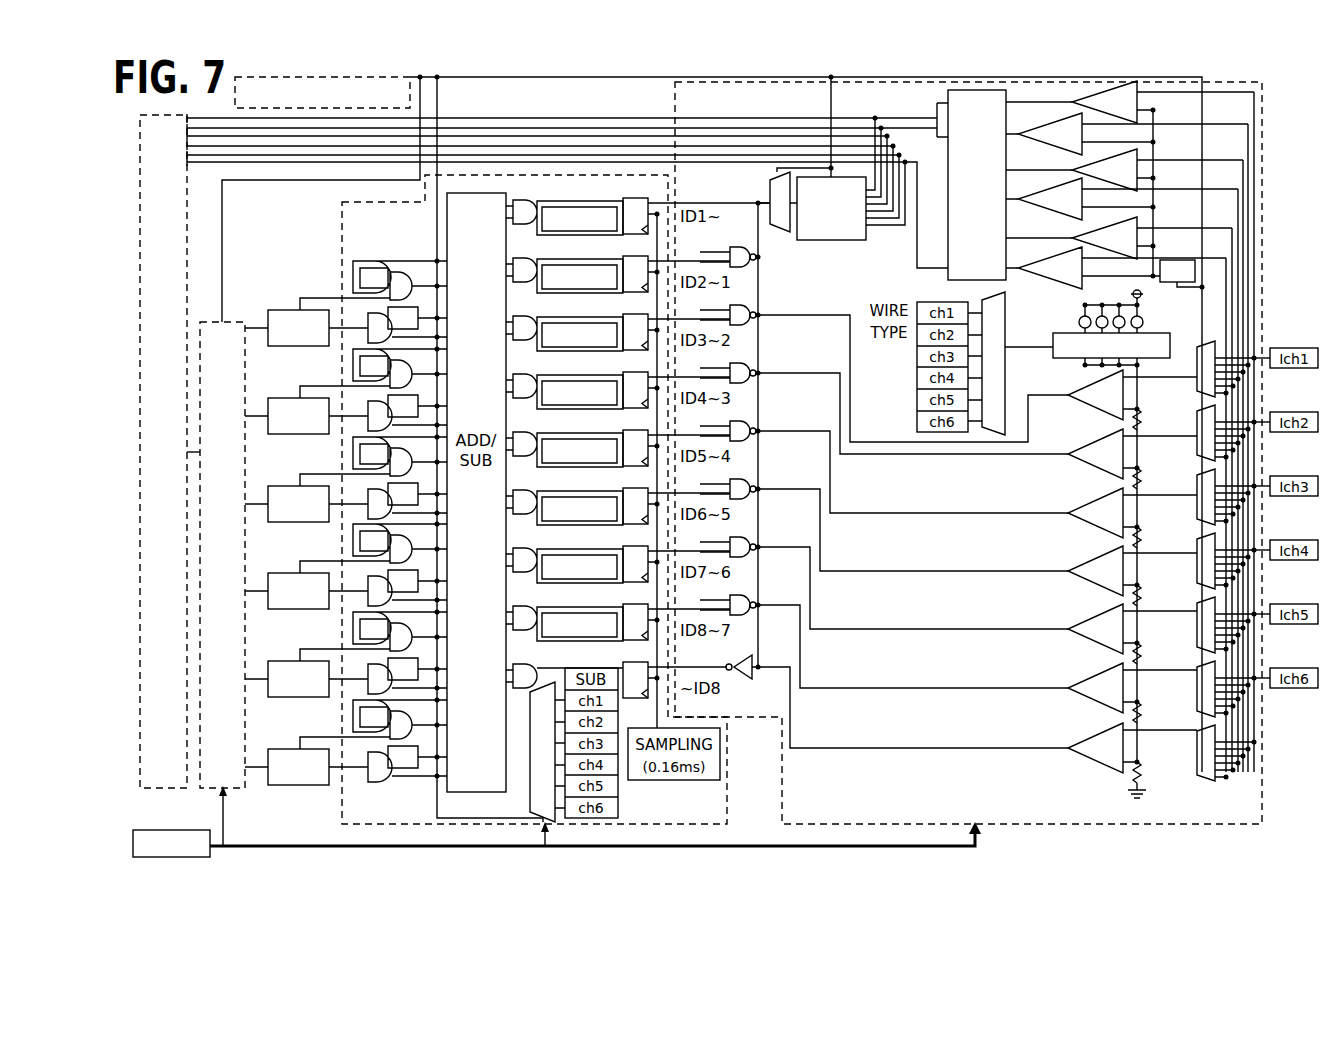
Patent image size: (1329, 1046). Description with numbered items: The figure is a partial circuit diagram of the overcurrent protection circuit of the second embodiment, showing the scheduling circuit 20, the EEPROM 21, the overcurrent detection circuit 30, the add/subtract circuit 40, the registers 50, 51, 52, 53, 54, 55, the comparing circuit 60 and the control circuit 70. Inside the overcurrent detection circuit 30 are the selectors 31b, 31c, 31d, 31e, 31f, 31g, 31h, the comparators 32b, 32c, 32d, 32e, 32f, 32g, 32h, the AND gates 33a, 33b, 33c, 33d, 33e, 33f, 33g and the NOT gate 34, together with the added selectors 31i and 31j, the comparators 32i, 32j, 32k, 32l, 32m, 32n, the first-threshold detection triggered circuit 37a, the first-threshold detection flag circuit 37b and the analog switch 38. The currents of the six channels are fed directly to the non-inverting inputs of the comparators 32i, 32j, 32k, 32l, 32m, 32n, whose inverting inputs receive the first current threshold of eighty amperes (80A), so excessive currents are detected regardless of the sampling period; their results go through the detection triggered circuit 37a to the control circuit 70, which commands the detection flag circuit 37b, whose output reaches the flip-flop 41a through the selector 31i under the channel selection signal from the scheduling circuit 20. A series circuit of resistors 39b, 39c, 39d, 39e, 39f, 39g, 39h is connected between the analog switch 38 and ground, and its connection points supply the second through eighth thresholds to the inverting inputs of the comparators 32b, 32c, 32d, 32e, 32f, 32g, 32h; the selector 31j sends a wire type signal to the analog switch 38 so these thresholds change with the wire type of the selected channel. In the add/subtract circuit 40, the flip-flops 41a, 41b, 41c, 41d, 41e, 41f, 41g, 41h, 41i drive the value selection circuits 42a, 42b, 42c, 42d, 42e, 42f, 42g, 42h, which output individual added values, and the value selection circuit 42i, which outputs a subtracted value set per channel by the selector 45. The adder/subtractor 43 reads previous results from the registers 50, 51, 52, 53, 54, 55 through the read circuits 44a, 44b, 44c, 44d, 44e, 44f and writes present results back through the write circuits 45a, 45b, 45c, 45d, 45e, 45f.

The scheduling circuit 20 is at (315, 78).
The electrically erasable programmable read-only memory (EEPROM) 21 is at (160, 830).
The overcurrent detection circuit 30 is at (1262, 100).
The selector 31b is at (1200, 369).
The selector 31c is at (1199, 433).
The selector 31d is at (1200, 497).
The selector 31e is at (1200, 561).
The selector 31f is at (1201, 625).
The selector 31g is at (1200, 689).
The selector 31h is at (1200, 753).
The selector 31i is at (785, 238).
The selector 31j is at (1006, 330).
The comparator 32b is at (1119, 395).
The comparator 32c is at (1119, 454).
The comparator 32d is at (1119, 513).
The comparator 32e is at (1119, 571).
The comparator 32f is at (1120, 629).
The comparator 32g is at (1119, 688).
The comparator 32h is at (1119, 748).
The comparator 32i is at (1140, 115).
The comparator 32j is at (1052, 128).
The comparator 32k is at (1140, 183).
The comparator 32l is at (1052, 193).
The comparator 32m is at (1140, 251).
The comparator 32n is at (1052, 260).
The AND gate 33a is at (723, 251).
The AND gate 33b is at (877, 367).
The AND gate 33c is at (877, 402).
The AND gate 33d is at (877, 461).
The AND gate 33e is at (877, 519).
The AND gate 33f is at (878, 577).
The AND gate 33g is at (877, 635).
The NOT gate 34 is at (726, 663).
The ID1-detection triggered circuit 37a is at (948, 272).
The ID1-detection flag circuit 37b is at (838, 242).
The analog switch 38 is at (1142, 333).
The resistor 39b is at (1161, 419).
The resistor 39c is at (1161, 478).
The resistor 39d is at (1161, 537).
The resistor 39e is at (1161, 595).
The resistor 39f is at (1160, 653).
The resistor 39g is at (1161, 712).
The resistor 39h is at (1159, 779).
The add/subtract circuit 40 is at (727, 760).
The flip-flop 41a is at (675, 208).
The flip-flop 41b is at (655, 266).
The flip-flop 41c is at (655, 324).
The flip-flop 41d is at (655, 382).
The flip-flop 41e is at (655, 440).
The flip-flop 41f is at (656, 498).
The flip-flop 41g is at (655, 556).
The flip-flop 41h is at (655, 614).
The flip-flop 41i is at (654, 672).
The value selection circuit 42a is at (564, 207).
The value selection circuit 42b is at (564, 265).
The value selection circuit 42c is at (564, 323).
The value selection circuit 42d is at (564, 381).
The value selection circuit 42e is at (564, 439).
The value selection circuit 42f is at (564, 497).
The value selection circuit 42g is at (564, 555).
The value selection circuit 42h is at (564, 613).
The value selection circuit 42i is at (564, 665).
The adder/subtractor 43 is at (530, 745).
The selector 45 is at (530, 738).
The read circuit 44a is at (370, 280).
The read circuit 44b is at (370, 368).
The read circuit 44c is at (370, 456).
The read circuit 44d is at (370, 543).
The read circuit 44e is at (370, 631).
The read circuit 44f is at (371, 719).
The write circuit 45a is at (370, 313).
The write circuit 45b is at (370, 401).
The write circuit 45c is at (370, 489).
The write circuit 45d is at (370, 576).
The write circuit 45e is at (370, 664).
The write circuit 45f is at (371, 752).
The register 50 is at (317, 311).
The register 51 is at (317, 399).
The register 52 is at (317, 487).
The register 53 is at (317, 574).
The register 54 is at (317, 662).
The register 55 is at (317, 750).
The comparing circuit 60 is at (214, 320).
The control circuit 70 is at (140, 505).
The reference voltage source 80A is at (1182, 275).